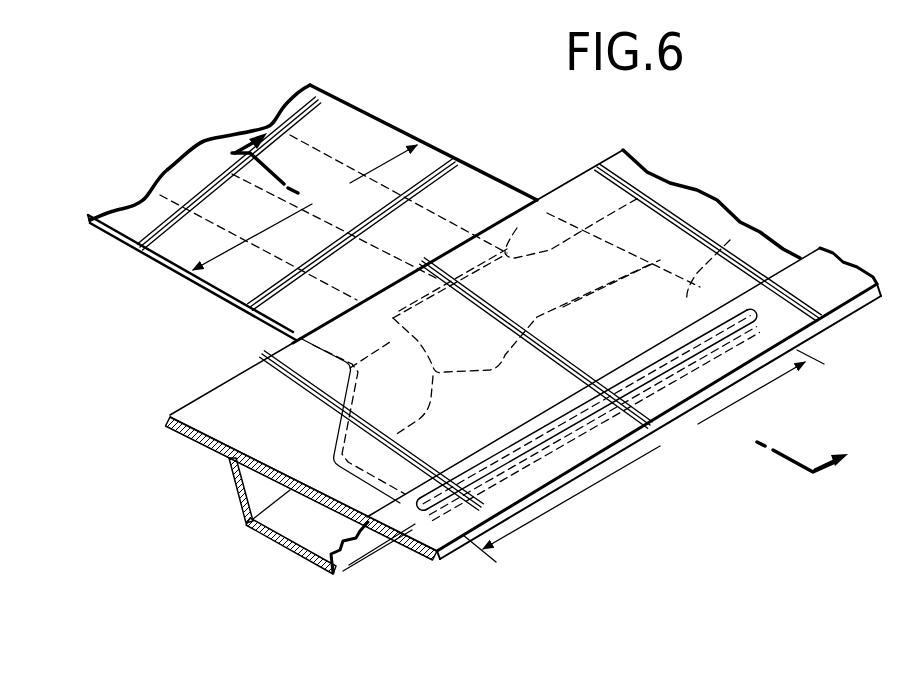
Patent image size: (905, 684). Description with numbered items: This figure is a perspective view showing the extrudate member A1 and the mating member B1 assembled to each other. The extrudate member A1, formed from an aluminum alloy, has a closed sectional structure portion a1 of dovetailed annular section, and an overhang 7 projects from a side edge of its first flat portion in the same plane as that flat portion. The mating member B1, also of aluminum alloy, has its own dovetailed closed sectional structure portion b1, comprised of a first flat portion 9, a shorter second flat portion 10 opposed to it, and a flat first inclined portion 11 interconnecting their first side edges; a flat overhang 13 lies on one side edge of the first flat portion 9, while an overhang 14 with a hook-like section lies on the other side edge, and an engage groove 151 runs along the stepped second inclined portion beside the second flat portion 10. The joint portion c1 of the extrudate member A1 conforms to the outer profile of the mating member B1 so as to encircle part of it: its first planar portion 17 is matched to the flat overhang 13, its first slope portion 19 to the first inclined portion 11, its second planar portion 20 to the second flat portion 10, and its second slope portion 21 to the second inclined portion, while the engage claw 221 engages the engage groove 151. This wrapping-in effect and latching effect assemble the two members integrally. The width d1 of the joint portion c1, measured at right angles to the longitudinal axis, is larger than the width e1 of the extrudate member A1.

The extrudate member A1 is at (400, 123).
The closed sectional structure portion a1 is at (168, 148).
The width of the extrudate member e1 is at (305, 207).
The mating member B1 is at (727, 193).
The overhang 13 is at (203, 408).
The overhang 14 is at (838, 270).
The first planar portion 17 is at (517, 228).
The first slope portion 19 is at (484, 372).
The second planar portion 20 is at (730, 240).
The second slope portion 21 is at (660, 367).
The engage claw 221 is at (488, 445).
The first flat portion 9 is at (288, 447).
The first inclined portion 11 is at (237, 493).
The second flat portion 10 is at (266, 534).
The engage groove 151 is at (342, 574).
The closed sectional structure portion b1 is at (289, 552).
The joint portion c1 is at (333, 432).
The width of the joint portion d1 is at (643, 456).
The overhang 7 is at (523, 328).